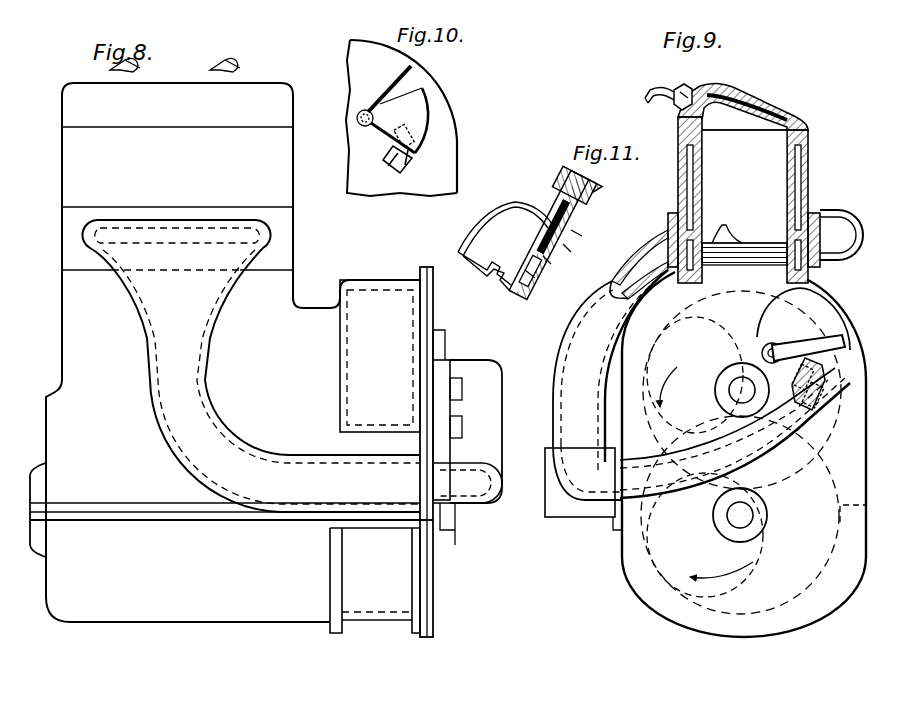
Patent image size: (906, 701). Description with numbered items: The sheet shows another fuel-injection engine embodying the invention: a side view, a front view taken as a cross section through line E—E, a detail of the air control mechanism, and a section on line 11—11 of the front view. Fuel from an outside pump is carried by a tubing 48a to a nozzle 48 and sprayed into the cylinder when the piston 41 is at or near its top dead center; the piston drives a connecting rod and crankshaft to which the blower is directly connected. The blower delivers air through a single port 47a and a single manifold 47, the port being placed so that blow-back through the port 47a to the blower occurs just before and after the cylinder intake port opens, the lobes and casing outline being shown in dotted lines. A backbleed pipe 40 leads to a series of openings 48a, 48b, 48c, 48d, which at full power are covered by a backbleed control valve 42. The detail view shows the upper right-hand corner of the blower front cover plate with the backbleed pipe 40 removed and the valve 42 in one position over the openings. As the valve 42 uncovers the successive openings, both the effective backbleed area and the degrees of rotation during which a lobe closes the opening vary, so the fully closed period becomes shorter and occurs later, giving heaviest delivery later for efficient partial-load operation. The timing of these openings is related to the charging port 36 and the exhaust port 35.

In FIG. 8, the section line E— E is at (231, 343).
In FIG. 9, the section line 11— 11 is at (855, 297).
In FIG. 9, the exhaust port 35 is at (807, 240).
In FIG. 9, the charging port 36 is at (682, 240).
In FIG. 8, the backbleed pipe 40 is at (485, 448).
In FIG. 11, the backbleed pipe 40 is at (514, 203).
In FIG. 9, the backbleed pipe 40 is at (722, 470).
In FIG. 9, the piston 41 is at (728, 246).
In FIG. 10, the backbleed control valve 42 is at (415, 110).
In FIG. 11, the backbleed control valve 42 is at (548, 237).
In FIG. 9, the backbleed control valve 42 is at (848, 340).
In FIG. 8, the manifold 47 is at (185, 428).
In FIG. 9, the manifold 47 is at (582, 388).
In FIG. 9, the port 47a is at (651, 452).
In FIG. 10, the nozzle 48 is at (415, 158).
In FIG. 9, the nozzle 48 is at (688, 88).
In FIG. 11, the tubing / first backbleed opening 48a is at (533, 276).
In FIG. 9, the tubing / first backbleed opening 48a is at (662, 92).
In FIG. 11, the second backbleed opening 48b is at (550, 262).
In FIG. 9, the second backbleed opening 48b is at (822, 398).
In FIG. 11, the third backbleed opening 48c is at (570, 250).
In FIG. 9, the third backbleed opening 48c is at (828, 380).
In FIG. 11, the fourth backbleed opening 48d is at (580, 238).
In FIG. 9, the fourth backbleed opening 48d is at (830, 362).